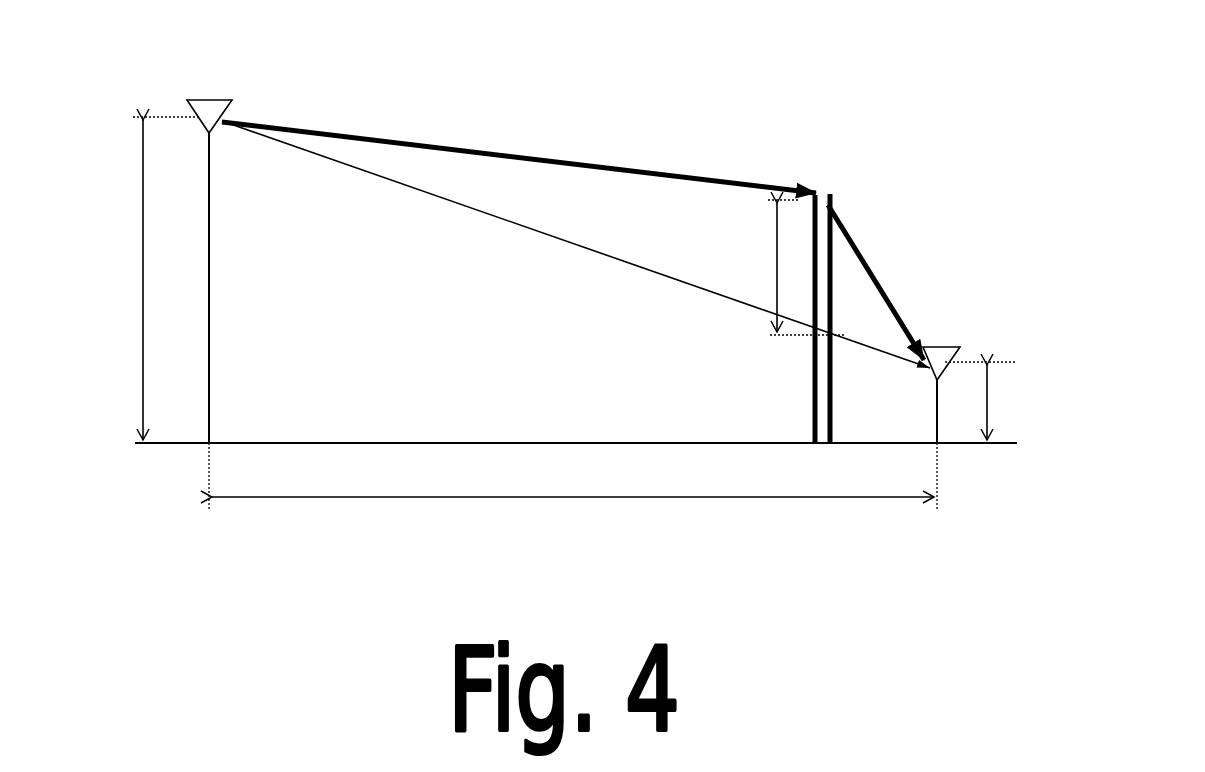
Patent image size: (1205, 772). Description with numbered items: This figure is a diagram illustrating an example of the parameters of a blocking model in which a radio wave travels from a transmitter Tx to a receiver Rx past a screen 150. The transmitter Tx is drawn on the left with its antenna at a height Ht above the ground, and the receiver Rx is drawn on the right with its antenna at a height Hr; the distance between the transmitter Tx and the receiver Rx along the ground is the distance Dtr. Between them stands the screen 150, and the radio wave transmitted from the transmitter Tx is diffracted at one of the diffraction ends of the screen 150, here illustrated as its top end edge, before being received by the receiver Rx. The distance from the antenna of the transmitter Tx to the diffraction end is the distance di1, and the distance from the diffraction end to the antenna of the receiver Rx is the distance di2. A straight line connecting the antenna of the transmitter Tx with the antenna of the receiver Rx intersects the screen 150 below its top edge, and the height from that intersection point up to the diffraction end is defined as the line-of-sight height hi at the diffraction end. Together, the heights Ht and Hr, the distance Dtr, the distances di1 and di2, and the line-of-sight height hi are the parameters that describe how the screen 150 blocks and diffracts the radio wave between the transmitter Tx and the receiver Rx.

The screen 150 is at (843, 207).
The transmitter Tx is at (158, 245).
The receiver Rx is at (1045, 369).
The distance from transmitter to diffraction end di1 is at (519, 106).
The distance from diffraction end to receiver di2 is at (876, 282).
The height of the transmitter antenna Ht is at (148, 278).
The height of the receiver antenna Hr is at (991, 401).
The line-of-sight height at the diffraction end hi is at (703, 264).
The distance between transmitter and receiver Dtr is at (573, 476).